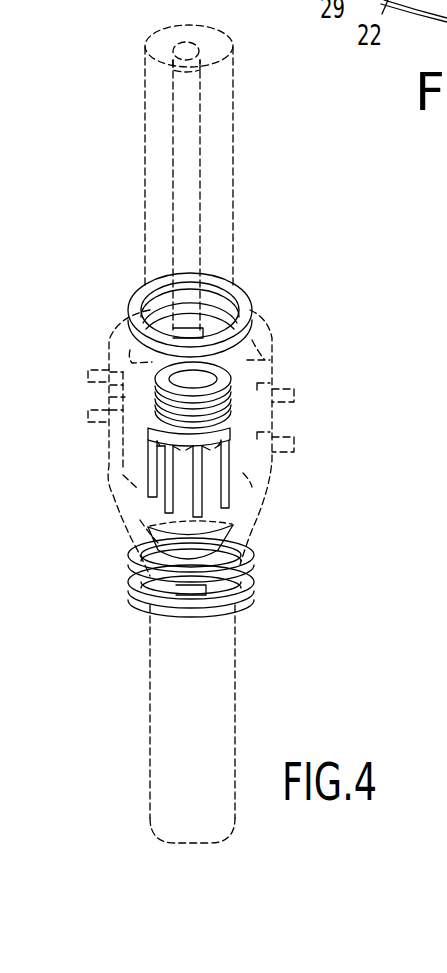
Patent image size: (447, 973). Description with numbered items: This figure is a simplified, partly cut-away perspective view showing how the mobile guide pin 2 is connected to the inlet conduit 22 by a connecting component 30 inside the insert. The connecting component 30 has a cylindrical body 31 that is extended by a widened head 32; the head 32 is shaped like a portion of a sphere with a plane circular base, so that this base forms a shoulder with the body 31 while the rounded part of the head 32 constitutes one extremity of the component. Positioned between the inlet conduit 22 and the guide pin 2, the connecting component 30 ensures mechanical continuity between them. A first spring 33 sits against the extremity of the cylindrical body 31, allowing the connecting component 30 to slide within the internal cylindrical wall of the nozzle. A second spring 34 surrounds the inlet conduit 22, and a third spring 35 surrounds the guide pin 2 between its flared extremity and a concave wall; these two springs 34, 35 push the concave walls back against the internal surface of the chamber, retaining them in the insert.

The mobile guide pin 2 is at (208, 712).
The inlet conduit 22 is at (162, 140).
The connecting component 30 is at (216, 523).
The cylindrical body 31 is at (203, 470).
The widened head 32 is at (249, 566).
The first spring 33 is at (155, 407).
The second spring 34 is at (134, 305).
The third spring 35 is at (252, 594).